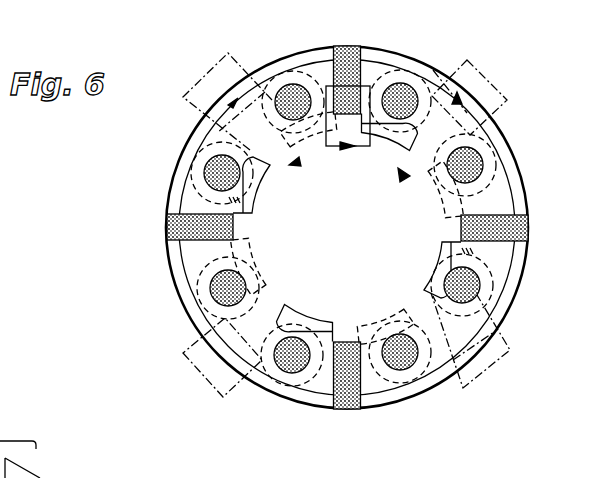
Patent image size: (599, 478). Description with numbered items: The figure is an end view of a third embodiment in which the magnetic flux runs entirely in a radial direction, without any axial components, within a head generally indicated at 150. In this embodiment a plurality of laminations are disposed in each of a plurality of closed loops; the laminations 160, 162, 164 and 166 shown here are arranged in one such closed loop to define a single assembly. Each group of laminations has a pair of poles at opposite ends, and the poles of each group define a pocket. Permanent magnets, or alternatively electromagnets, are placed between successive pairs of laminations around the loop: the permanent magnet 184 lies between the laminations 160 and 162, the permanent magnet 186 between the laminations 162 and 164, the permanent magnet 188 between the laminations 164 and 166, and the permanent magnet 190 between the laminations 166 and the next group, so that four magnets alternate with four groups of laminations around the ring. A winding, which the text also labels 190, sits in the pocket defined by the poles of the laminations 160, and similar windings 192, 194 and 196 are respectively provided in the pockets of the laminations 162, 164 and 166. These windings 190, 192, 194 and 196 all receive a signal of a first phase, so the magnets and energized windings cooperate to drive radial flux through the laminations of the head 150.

The head 150 is at (483, 386).
The laminations 160 is at (200, 135).
The laminations 162 is at (193, 303).
The laminations 164 is at (411, 385).
The laminations 166 is at (487, 130).
The permanent magnet 184 is at (172, 224).
The permanent magnet 186 is at (353, 413).
The permanent magnet 188 is at (461, 229).
The permanent magnet 190 is at (343, 45).
The winding 192 is at (305, 342).
The winding 194 is at (477, 160).
The winding 196 is at (301, 58).